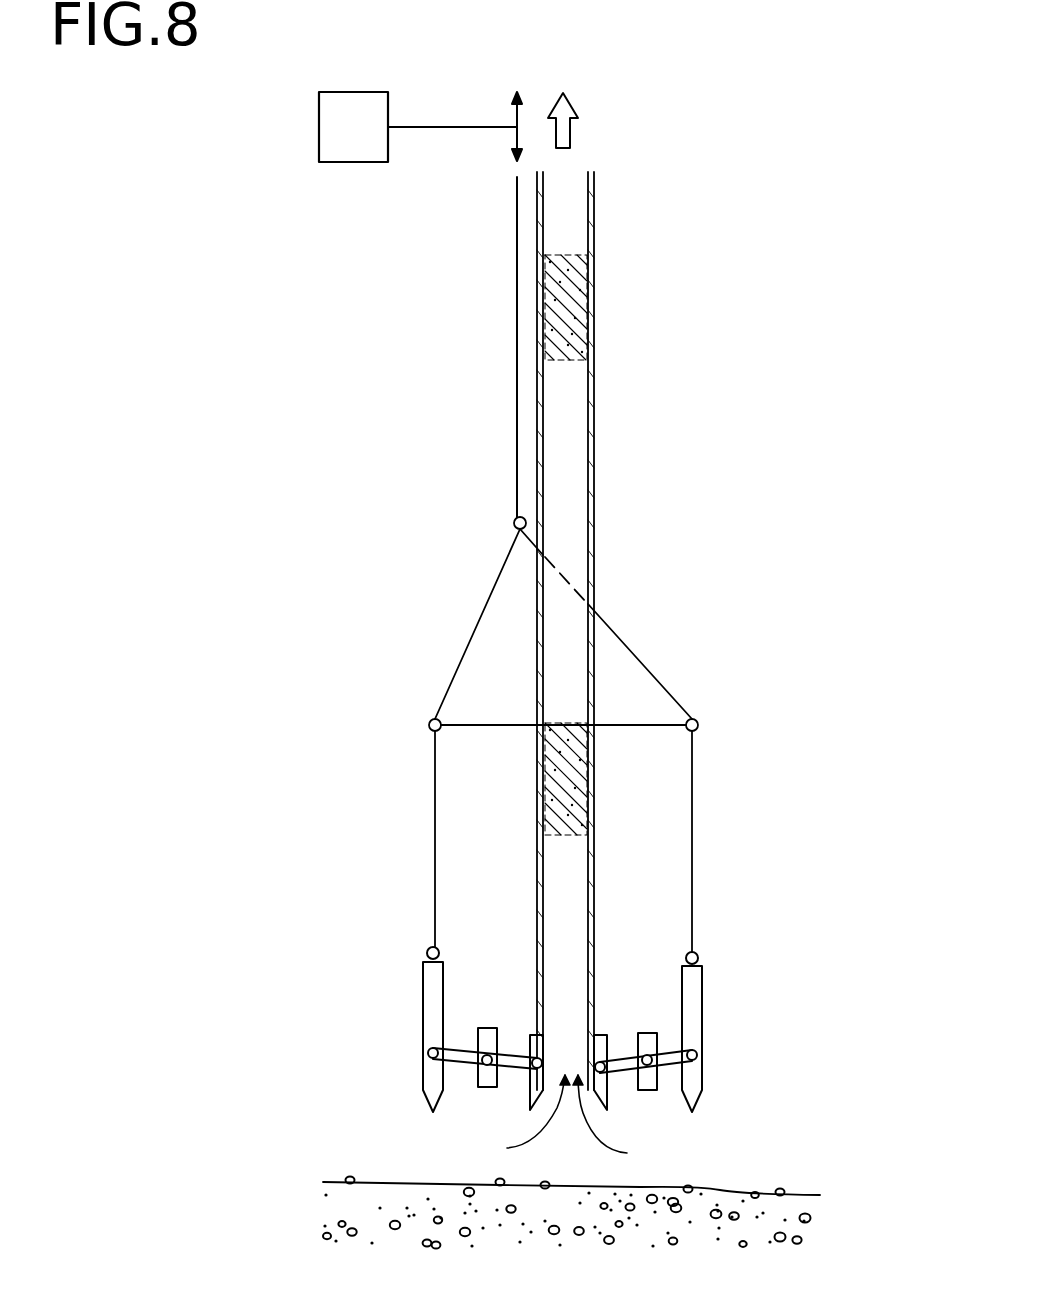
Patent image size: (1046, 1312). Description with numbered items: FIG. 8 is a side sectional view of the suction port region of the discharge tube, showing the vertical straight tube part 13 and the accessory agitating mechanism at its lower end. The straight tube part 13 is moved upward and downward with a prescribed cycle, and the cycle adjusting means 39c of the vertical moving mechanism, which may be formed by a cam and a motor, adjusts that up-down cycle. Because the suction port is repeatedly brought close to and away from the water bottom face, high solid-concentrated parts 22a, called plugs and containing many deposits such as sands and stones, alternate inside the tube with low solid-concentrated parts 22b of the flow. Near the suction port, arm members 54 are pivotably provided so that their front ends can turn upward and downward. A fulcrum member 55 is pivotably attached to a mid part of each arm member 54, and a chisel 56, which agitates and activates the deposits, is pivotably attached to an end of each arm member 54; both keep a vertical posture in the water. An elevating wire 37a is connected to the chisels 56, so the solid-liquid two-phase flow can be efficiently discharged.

The cycle adjusting means 39c is at (352, 162).
The elevating wire 37a is at (517, 295).
The straight tube part 13 is at (597, 458).
The low solid-concentrated part 22b is at (573, 192).
The high solid-concentrated part 22a is at (576, 293).
The fulcrum member 55 is at (647, 1033).
The chisel 56 is at (694, 993).
The arm member 54 is at (668, 1052).